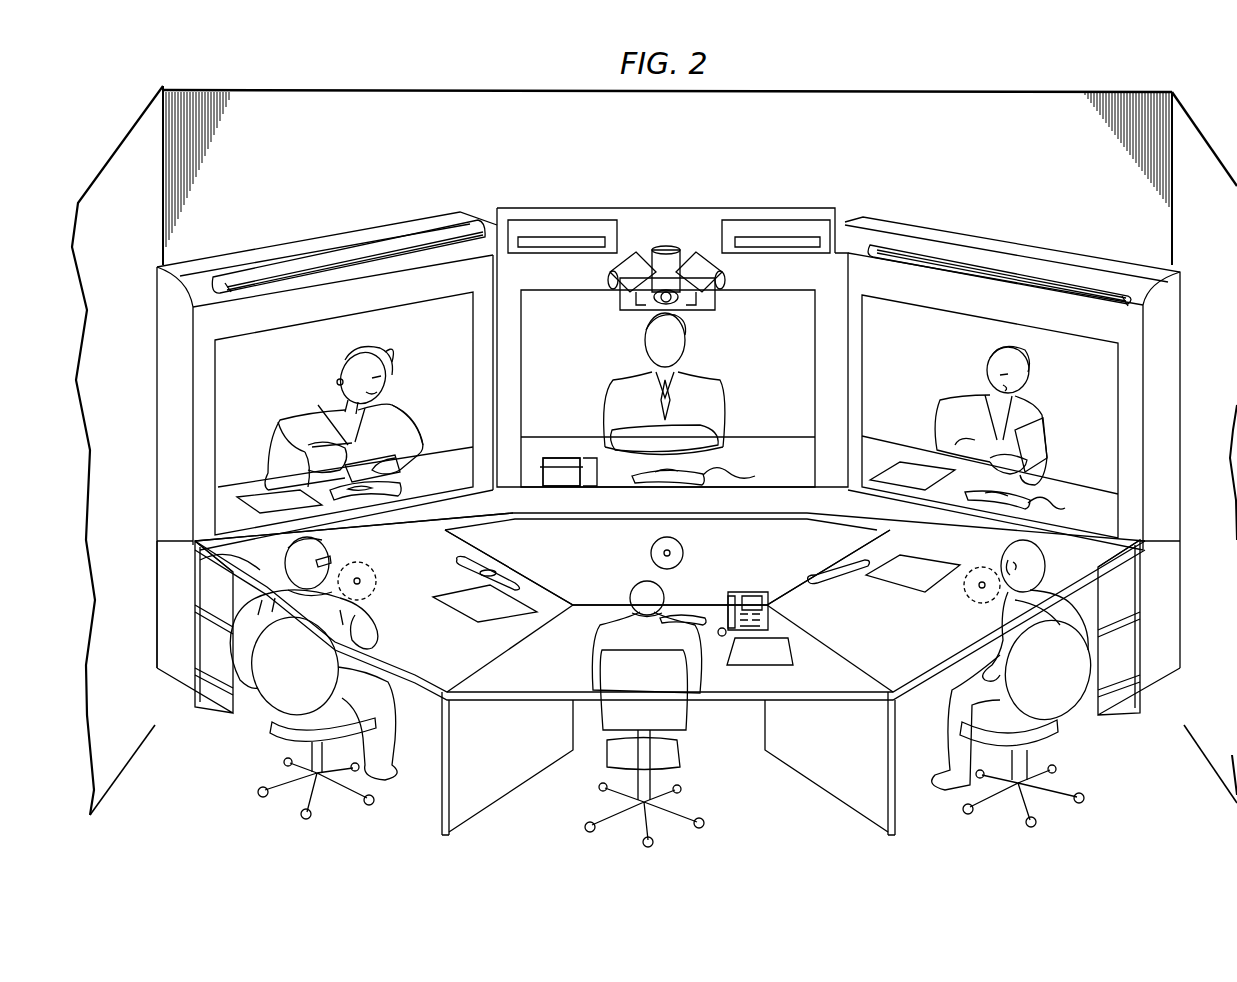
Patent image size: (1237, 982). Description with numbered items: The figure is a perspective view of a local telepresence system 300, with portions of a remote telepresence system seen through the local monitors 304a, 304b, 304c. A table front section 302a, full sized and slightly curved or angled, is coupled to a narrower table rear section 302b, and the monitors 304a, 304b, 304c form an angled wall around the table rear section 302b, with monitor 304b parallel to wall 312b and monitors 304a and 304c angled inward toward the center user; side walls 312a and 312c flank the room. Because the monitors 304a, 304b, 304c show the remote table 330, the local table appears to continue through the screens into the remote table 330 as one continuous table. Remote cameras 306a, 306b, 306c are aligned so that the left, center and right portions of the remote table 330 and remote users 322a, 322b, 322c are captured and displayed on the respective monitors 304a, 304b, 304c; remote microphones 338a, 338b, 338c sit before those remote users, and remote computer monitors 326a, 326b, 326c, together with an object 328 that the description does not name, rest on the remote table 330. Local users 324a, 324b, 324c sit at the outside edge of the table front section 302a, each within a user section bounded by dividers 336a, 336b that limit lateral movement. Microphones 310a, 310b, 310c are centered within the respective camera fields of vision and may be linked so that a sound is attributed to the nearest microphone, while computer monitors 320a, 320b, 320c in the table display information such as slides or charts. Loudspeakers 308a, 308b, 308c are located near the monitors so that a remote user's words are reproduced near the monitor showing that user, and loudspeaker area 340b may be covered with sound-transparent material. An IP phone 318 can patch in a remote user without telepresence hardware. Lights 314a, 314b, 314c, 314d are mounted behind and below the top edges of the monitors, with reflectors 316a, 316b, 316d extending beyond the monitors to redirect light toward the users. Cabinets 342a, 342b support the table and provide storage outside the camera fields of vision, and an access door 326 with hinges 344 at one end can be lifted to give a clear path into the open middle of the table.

The telepresence system 300 is at (953, 82).
The table front section 302a is at (922, 658).
The table rear section 302b is at (165, 545).
The monitor 304a is at (452, 343).
The monitor 304b is at (805, 346).
The monitor 304c is at (933, 346).
The remote camera 306a is at (640, 246).
The remote camera 306b is at (665, 242).
The remote camera 306c is at (697, 246).
The loudspeaker 308a is at (362, 566).
The loudspeaker 308b is at (652, 555).
The loudspeaker 308c is at (979, 567).
The microphone 310a is at (505, 565).
The microphone 310b is at (690, 615).
The microphone 310c is at (812, 572).
The wall 312a is at (150, 226).
The wall 312b is at (310, 143).
The wall 312c is at (1232, 233).
The light 314a is at (372, 246).
The light 314b is at (566, 238).
The light 314c is at (773, 238).
The light 314d is at (975, 262).
The reflector 316a is at (300, 255).
The reflector 316b is at (522, 228).
The reflector 316d is at (1050, 268).
The IP phone 318 is at (748, 592).
The computer monitor 320a is at (458, 614).
The computer monitor 320b is at (795, 652).
The computer monitor 320c is at (918, 565).
The remote user 322a is at (312, 412).
The remote user 322b is at (693, 372).
The remote user 322c is at (1033, 420).
The user 324a is at (372, 602).
The user 324b is at (590, 640).
The user 324c is at (1005, 608).
The access door 326 is at (200, 570).
The remote computer monitor 326a is at (260, 492).
The remote computer monitor 326b is at (590, 447).
The remote computer monitor 326c is at (905, 470).
The remote object 328 is at (550, 458).
The remote table 330 is at (757, 440).
The divider 336a is at (500, 790).
The divider 336b is at (838, 793).
The remote microphone 338a is at (442, 460).
The remote microphone 338b is at (714, 472).
The remote microphone 338c is at (1038, 506).
The loudspeaker area 340b is at (616, 590).
The cabinet 342a is at (215, 663).
The cabinet 342b is at (1122, 664).
The hinges 344 is at (410, 572).